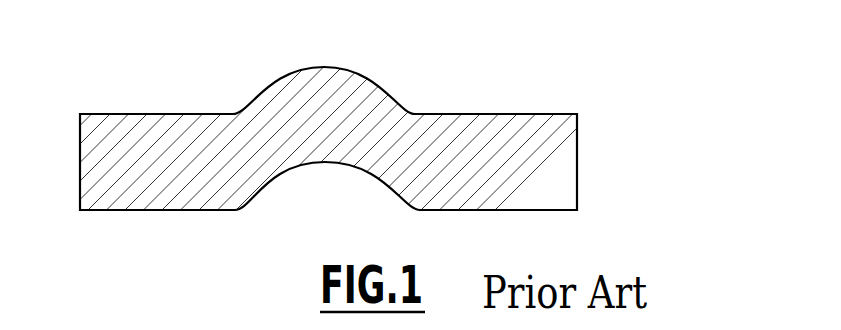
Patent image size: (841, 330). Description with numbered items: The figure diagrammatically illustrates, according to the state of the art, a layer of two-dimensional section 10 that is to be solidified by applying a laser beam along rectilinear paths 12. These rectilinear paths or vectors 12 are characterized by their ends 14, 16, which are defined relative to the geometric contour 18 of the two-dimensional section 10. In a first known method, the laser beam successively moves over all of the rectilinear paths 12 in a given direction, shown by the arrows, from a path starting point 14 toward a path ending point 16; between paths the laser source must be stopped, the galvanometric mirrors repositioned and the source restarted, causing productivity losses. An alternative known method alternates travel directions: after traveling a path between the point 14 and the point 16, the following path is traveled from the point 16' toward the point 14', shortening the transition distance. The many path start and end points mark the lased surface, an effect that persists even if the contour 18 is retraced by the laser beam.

The two-dimensional section 10 is at (590, 109).
The rectilinear paths 12 is at (103, 174).
The path starting point 14 is at (197, 247).
The path ending point of the following path 14' is at (270, 226).
The path ending point 16 is at (306, 33).
The path starting point of the following path 16' is at (369, 60).
The geometric contour 18 is at (178, 112).